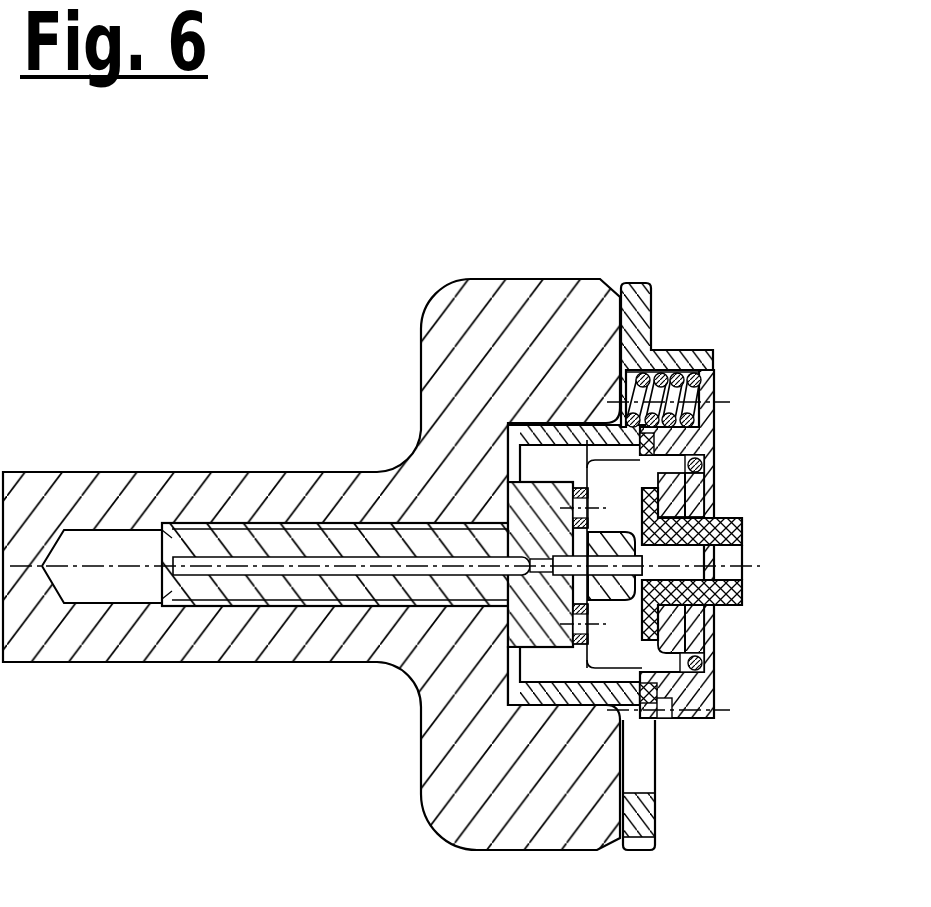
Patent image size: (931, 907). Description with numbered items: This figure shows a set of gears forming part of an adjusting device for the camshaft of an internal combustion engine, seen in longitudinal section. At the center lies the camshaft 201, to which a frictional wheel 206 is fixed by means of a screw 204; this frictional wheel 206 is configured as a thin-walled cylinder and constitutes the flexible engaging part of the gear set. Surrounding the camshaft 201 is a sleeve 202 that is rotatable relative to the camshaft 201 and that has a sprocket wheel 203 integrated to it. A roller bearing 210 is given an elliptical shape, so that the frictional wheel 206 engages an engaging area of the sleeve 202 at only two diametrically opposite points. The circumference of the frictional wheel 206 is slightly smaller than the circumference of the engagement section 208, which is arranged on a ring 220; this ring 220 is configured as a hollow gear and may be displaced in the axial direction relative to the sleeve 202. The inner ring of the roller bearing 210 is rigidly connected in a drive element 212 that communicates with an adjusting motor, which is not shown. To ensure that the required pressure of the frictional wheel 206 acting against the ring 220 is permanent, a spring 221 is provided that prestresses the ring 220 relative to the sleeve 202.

The camshaft 201 is at (290, 647).
The sleeve 202 is at (560, 688).
The sprocket wheel 203 is at (645, 817).
The screw 204 is at (440, 598).
The frictional wheel 206 is at (683, 475).
The engagement section 208 is at (713, 670).
The roller bearing 210 is at (613, 459).
The drive element 212 is at (742, 594).
The ring 220 is at (697, 440).
The spring 221 is at (700, 371).